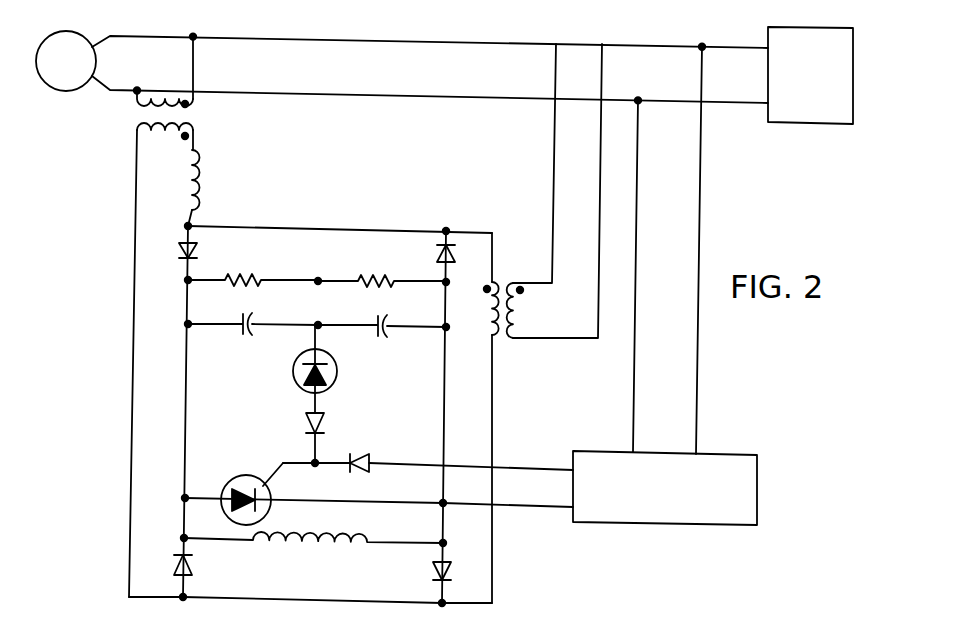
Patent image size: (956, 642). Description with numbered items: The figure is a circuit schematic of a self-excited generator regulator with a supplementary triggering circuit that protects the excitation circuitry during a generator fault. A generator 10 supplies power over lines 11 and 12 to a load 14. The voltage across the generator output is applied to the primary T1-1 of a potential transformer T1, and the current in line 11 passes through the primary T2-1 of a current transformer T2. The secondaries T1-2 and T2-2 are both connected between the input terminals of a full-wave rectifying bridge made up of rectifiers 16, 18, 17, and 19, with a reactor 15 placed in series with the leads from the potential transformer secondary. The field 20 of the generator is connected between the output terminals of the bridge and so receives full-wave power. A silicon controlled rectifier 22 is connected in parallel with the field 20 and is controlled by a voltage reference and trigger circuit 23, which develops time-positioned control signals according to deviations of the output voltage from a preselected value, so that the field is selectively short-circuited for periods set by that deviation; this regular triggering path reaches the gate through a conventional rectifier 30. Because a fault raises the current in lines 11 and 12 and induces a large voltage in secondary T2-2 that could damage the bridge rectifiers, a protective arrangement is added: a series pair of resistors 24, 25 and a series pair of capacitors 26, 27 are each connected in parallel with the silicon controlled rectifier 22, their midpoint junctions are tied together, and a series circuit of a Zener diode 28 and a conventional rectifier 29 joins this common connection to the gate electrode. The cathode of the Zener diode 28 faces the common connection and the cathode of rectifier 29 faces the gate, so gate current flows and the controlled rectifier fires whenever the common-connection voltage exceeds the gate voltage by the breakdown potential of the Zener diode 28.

The generator 10 is at (60, 32).
The line 11 is at (146, 34).
The line 12 is at (104, 92).
The load 14 is at (799, 125).
The reactor 15 is at (200, 185).
The rectifier 16 is at (178, 251).
The rectifier 17 is at (451, 569).
The rectifier 18 is at (175, 569).
The rectifier 19 is at (437, 253).
The field 20 is at (322, 567).
The silicon controlled rectifier 22 is at (236, 477).
The voltage reference and trigger circuit 23 is at (758, 494).
The resistor 24 is at (252, 277).
The resistor 25 is at (384, 278).
The capacitor 26 is at (241, 322).
The capacitor 27 is at (376, 322).
The Zener diode 28 is at (338, 376).
The rectifier 29 is at (305, 423).
The rectifier 30 is at (368, 460).
The potential transformer T1 is at (179, 93).
The primary winding of potential transformer T1-1 is at (193, 104).
The secondary winding of potential transformer T1-2 is at (193, 130).
The current transformer T2 is at (543, 206).
The primary winding of current transformer T2-1 is at (520, 312).
The secondary winding of current transformer T2-2 is at (497, 338).